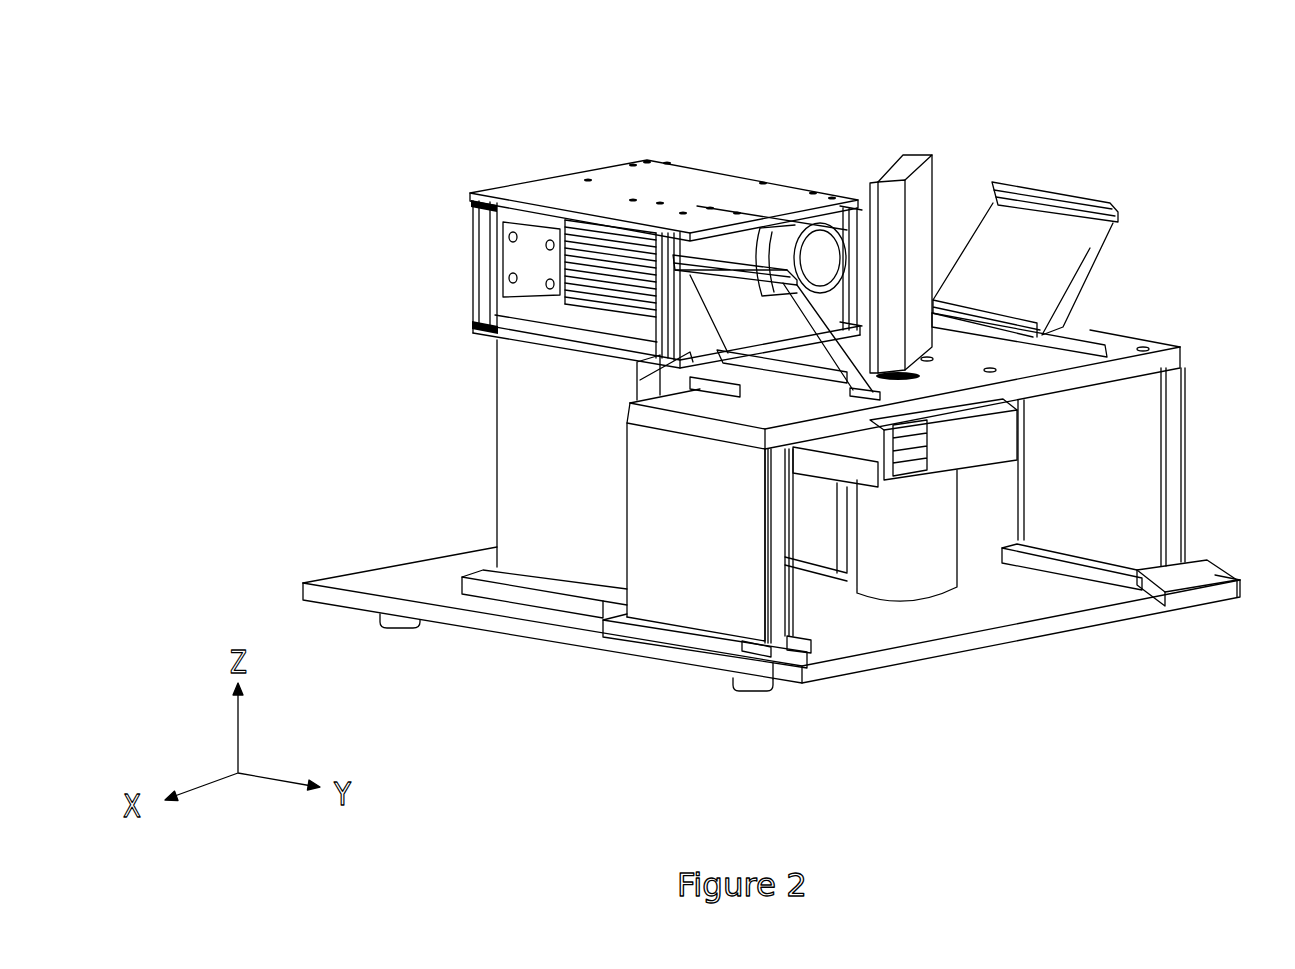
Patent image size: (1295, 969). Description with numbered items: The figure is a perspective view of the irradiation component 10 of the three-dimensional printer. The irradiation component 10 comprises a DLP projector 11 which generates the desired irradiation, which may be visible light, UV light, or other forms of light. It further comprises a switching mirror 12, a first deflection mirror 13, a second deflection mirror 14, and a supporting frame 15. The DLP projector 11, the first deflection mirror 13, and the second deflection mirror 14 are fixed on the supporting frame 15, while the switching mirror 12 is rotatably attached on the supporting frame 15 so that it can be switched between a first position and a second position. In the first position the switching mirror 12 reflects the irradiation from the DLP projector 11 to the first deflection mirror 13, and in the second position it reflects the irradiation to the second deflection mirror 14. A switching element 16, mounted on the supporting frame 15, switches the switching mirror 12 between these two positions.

The irradiation component 10 is at (790, 389).
The DLP projector 11 is at (510, 279).
The switching mirror 12 is at (920, 198).
The first deflection mirror 13 is at (1113, 247).
The second deflection mirror 14 is at (748, 262).
The supporting frame 15 is at (747, 615).
The switching element 16 is at (947, 498).